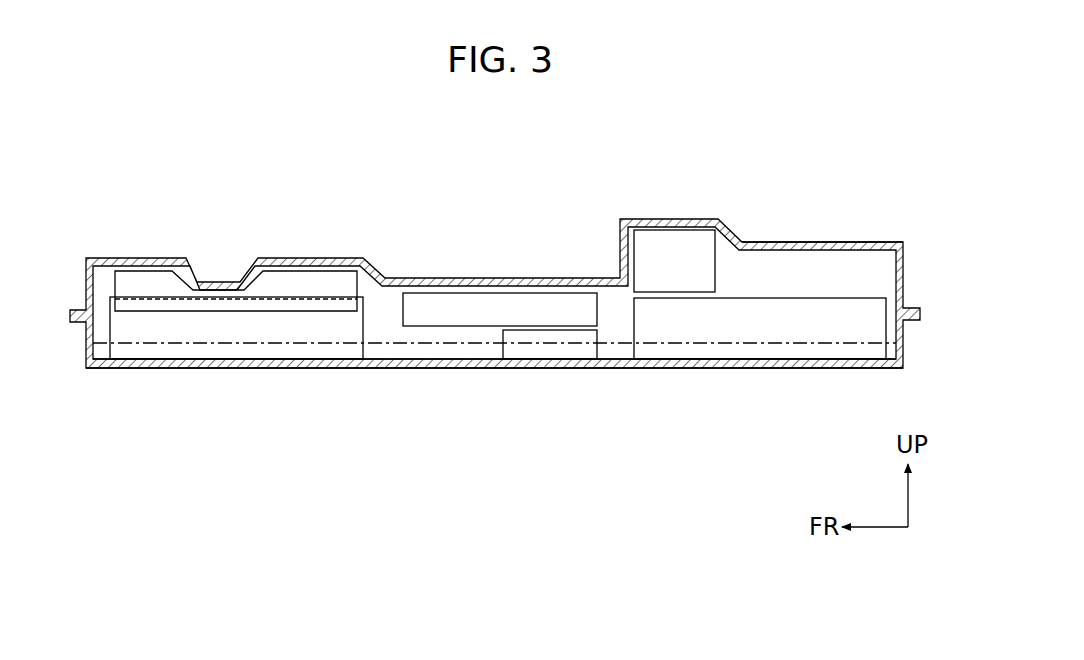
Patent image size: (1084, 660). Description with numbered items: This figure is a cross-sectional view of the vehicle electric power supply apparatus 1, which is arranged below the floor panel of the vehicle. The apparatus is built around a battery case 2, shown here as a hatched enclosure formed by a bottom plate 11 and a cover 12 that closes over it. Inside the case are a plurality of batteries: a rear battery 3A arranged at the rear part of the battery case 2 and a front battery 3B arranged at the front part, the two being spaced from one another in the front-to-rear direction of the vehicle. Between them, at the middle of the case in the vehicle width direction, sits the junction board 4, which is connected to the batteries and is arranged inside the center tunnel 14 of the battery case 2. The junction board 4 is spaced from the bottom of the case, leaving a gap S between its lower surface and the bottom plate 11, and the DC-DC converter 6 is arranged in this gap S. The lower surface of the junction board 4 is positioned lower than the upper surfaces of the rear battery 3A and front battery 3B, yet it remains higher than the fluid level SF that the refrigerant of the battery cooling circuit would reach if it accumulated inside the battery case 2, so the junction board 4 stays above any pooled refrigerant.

The vehicle electric power supply apparatus 1 is at (860, 170).
The battery case 2 is at (890, 238).
The bottom plate 11 is at (774, 366).
The cover 12 is at (812, 242).
The rear battery 3A is at (663, 285).
The front battery 3B is at (265, 358).
The junction board 4 is at (565, 300).
The DC-DC converter 6 is at (556, 358).
The center tunnel 14 is at (384, 310).
The gap S is at (440, 355).
The fluid level SF is at (457, 343).